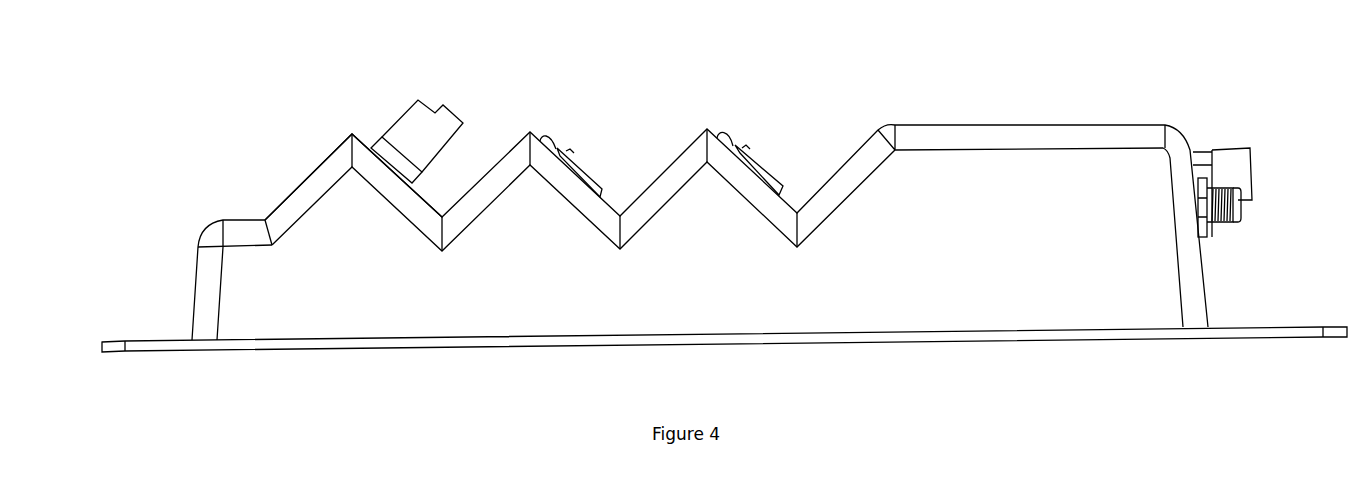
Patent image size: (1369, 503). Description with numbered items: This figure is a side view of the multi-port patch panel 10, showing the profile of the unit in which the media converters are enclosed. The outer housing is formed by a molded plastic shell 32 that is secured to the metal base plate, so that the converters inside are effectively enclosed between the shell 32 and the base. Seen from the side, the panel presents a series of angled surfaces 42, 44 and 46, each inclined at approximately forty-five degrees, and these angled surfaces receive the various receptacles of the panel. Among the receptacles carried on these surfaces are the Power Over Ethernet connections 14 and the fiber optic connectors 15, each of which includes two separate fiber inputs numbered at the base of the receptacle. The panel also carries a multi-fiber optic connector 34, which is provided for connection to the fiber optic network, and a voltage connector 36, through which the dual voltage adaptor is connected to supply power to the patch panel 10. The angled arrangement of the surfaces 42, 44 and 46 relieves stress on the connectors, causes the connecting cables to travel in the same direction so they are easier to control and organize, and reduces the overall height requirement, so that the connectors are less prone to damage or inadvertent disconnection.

The patch panel 10 is at (970, 72).
The angled surface 42 is at (360, 122).
The fiber optic connector 15 is at (448, 93).
The Power Over Ethernet connection 14 is at (601, 161).
The angled surface 44 is at (567, 136).
The angled surface 46 is at (732, 127).
The multi-fiber optic connector 34 is at (1246, 134).
The voltage connector 36 is at (1244, 221).
The molded plastic shell 32 is at (660, 306).